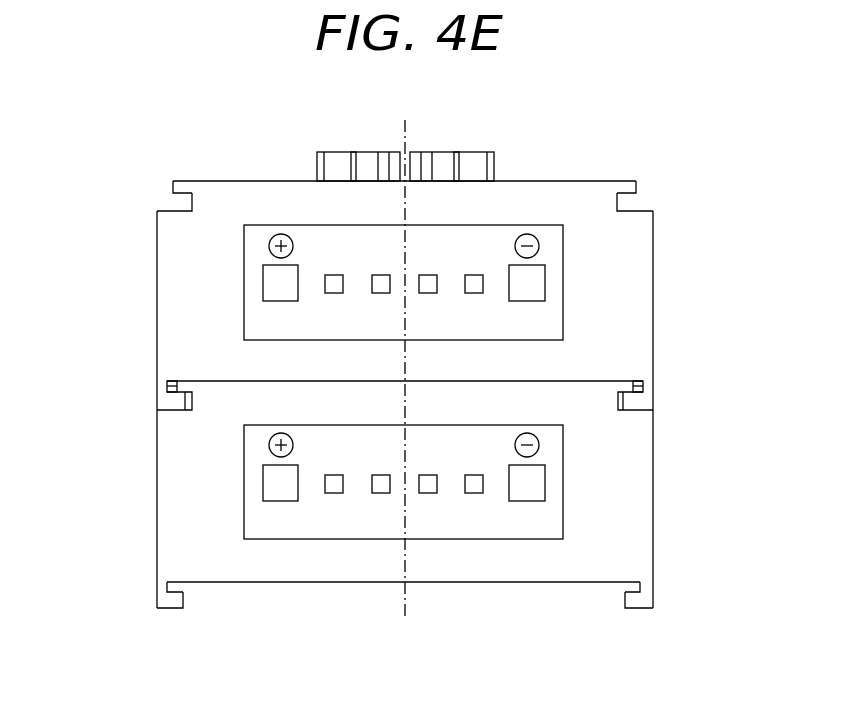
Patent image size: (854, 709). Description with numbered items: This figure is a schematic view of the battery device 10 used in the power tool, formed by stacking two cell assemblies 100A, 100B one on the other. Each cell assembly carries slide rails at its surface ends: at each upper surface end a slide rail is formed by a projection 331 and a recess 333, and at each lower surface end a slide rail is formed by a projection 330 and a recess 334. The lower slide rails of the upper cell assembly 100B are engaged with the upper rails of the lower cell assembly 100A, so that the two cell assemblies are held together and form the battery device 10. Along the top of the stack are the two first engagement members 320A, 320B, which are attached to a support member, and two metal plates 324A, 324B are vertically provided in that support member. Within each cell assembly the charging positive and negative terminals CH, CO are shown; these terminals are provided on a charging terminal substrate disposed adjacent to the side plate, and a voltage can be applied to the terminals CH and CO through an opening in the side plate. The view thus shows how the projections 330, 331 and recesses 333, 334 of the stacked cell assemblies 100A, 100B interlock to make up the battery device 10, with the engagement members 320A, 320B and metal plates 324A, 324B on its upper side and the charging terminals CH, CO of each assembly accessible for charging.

The battery device 10 is at (690, 523).
The cell assembly 100A is at (436, 568).
The cell assembly 100B is at (560, 191).
The first engagement member 320A is at (488, 158).
The first engagement member 320B is at (320, 162).
The metal plate 324A is at (458, 158).
The metal plate 324B is at (353, 158).
The projection 330 is at (172, 400).
The projection 331 is at (179, 181).
The recess 333 is at (175, 200).
The recess 334 is at (180, 587).
The charging positive terminal CH is at (270, 288).
The charging negative terminal CO is at (543, 292).